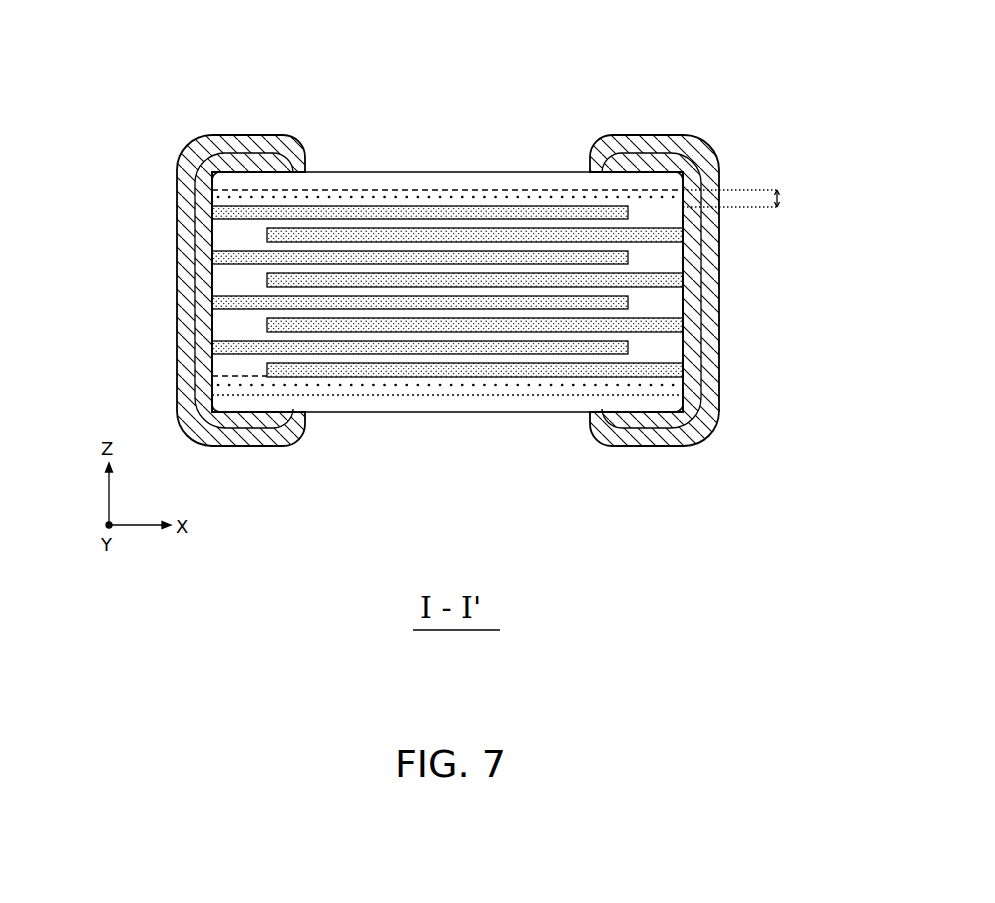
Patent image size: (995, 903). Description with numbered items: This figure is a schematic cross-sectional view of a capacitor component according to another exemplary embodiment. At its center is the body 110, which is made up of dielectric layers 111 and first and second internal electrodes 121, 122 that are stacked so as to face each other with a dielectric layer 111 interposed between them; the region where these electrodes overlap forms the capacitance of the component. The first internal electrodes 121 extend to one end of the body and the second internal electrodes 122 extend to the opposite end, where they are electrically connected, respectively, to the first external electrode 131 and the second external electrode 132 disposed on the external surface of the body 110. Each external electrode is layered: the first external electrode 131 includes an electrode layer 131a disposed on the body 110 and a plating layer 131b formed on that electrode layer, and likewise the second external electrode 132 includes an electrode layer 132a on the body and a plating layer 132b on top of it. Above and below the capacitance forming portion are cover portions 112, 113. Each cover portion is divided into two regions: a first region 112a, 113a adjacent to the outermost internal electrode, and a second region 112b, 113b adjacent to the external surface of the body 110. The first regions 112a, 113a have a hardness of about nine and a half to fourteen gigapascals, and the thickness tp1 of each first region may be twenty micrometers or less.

The body 110 is at (343, 172).
The dielectric layer 111 is at (305, 248).
The cover portion 112 is at (447, 109).
The first region 112a is at (530, 58).
The second region 112b is at (485, 180).
The cover portion 113 is at (447, 443).
The first region 113a is at (420, 380).
The second region 113b is at (387, 468).
The first internal electrode 121 is at (532, 212).
The second internal electrode 122 is at (573, 237).
The first external electrode 131 is at (170, 290).
The electrode layer 131a is at (196, 221).
The plating layer 131b is at (183, 246).
The second external electrode 132 is at (725, 290).
The electrode layer 132a is at (690, 272).
The plating layer 132b is at (710, 297).
The thickness of first region tp1 is at (780, 198).